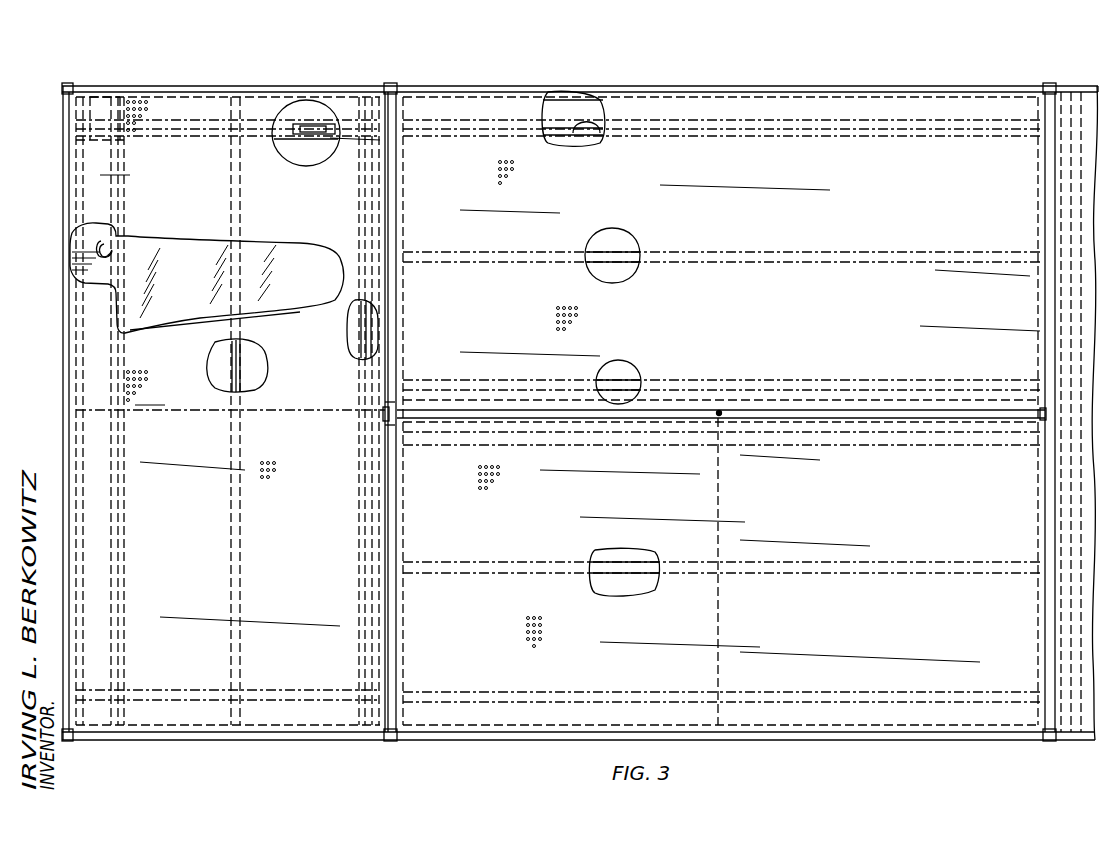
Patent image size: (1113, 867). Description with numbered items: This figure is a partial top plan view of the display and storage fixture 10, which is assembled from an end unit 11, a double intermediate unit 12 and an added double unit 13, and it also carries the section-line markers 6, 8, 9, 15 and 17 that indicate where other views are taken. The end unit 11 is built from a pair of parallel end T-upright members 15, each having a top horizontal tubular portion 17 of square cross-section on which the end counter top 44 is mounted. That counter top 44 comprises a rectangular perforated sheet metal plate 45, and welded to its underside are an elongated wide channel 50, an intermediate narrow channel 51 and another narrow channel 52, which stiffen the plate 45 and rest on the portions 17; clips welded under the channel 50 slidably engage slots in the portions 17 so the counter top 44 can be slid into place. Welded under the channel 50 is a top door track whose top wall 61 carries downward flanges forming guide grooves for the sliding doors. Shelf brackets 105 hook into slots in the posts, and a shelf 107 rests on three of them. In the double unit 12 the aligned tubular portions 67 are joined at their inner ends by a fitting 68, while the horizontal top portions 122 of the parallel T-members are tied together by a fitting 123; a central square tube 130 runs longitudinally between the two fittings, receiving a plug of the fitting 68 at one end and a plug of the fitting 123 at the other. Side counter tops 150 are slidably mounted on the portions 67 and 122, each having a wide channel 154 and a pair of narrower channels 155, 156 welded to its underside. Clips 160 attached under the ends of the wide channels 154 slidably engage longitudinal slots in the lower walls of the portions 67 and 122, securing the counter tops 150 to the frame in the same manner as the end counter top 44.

The section line 6- 6 is at (50, 137).
The section line 8- 8 is at (76, 78).
The section line 9- 9 is at (425, 50).
The display and storage fixture 10 is at (606, 55).
The end unit 11 is at (215, 70).
The double intermediate unit 12 is at (758, 72).
The added double unit 13 is at (1097, 80).
The end T-upright member 15 is at (50, 92).
The top horizontal tubular longitudinal portion 17 is at (292, 150).
The end counter top 44 is at (53, 192).
The top perforated sheet metal plate 45 is at (210, 105).
The wide channel 50 is at (90, 262).
The intermediate narrow channel 51 is at (242, 385).
The narrow channel 52 is at (360, 354).
The top wall of door track 61 is at (112, 252).
The tubular horizontal portion 67 is at (392, 243).
The fitting 68 is at (388, 416).
The bracket 105 is at (192, 130).
The shelf 107 is at (268, 298).
The horizontal top portion 122 is at (1040, 292).
The fitting 123 is at (1052, 413).
The top horizontal longitudinal central tube 130 is at (866, 412).
The side counter top 150 is at (892, 715).
The wide channel 154 is at (557, 110).
The narrower channel 155 is at (620, 256).
The narrower channel 156 is at (618, 386).
The clip 160 is at (403, 110).